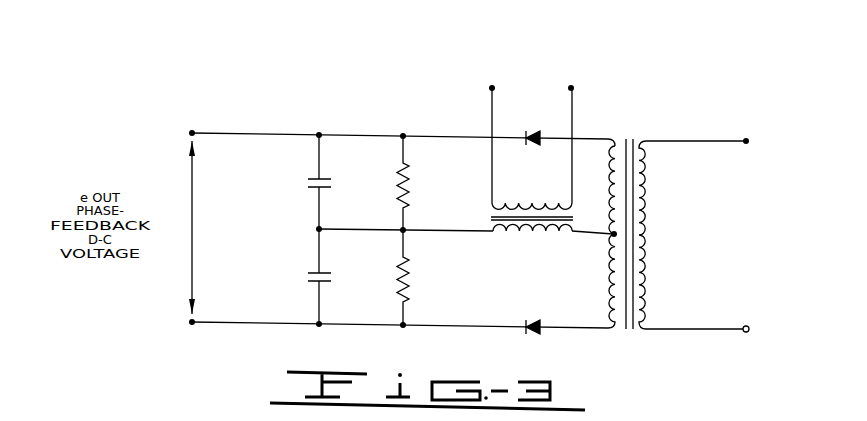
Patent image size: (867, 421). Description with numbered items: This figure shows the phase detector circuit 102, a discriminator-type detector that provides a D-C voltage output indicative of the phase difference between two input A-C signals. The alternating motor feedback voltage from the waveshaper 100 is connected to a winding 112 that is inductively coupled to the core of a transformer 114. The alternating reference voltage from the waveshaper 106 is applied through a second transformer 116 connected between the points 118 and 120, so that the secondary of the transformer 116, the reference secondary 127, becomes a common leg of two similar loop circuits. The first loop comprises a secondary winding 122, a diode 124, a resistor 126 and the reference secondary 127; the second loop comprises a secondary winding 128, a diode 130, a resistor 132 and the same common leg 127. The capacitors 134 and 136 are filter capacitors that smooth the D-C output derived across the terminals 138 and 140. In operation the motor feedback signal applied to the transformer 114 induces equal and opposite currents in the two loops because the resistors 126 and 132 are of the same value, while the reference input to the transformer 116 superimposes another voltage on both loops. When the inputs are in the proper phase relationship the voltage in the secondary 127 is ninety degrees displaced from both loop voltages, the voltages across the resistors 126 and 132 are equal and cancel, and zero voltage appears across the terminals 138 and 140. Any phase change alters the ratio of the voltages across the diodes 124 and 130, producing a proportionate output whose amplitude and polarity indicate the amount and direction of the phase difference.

The waveshaper 100 is at (738, 235).
The phase detector circuit 102 is at (441, 129).
The waveshaper 106 is at (537, 53).
The winding 112 is at (645, 206).
The transformer 114 is at (640, 348).
The second transformer 116 is at (472, 225).
The point 118 is at (406, 234).
The point 120 is at (604, 241).
The secondary winding 122 is at (611, 188).
The diode 124 is at (540, 112).
The resistor 126 is at (413, 177).
The reference secondary 127 is at (538, 240).
The secondary winding 128 is at (611, 283).
The diode 130 is at (528, 320).
The resistor 132 is at (413, 276).
The capacitor 134 is at (335, 182).
The capacitor 136 is at (334, 276).
The terminal 138 is at (195, 131).
The terminal 140 is at (195, 320).